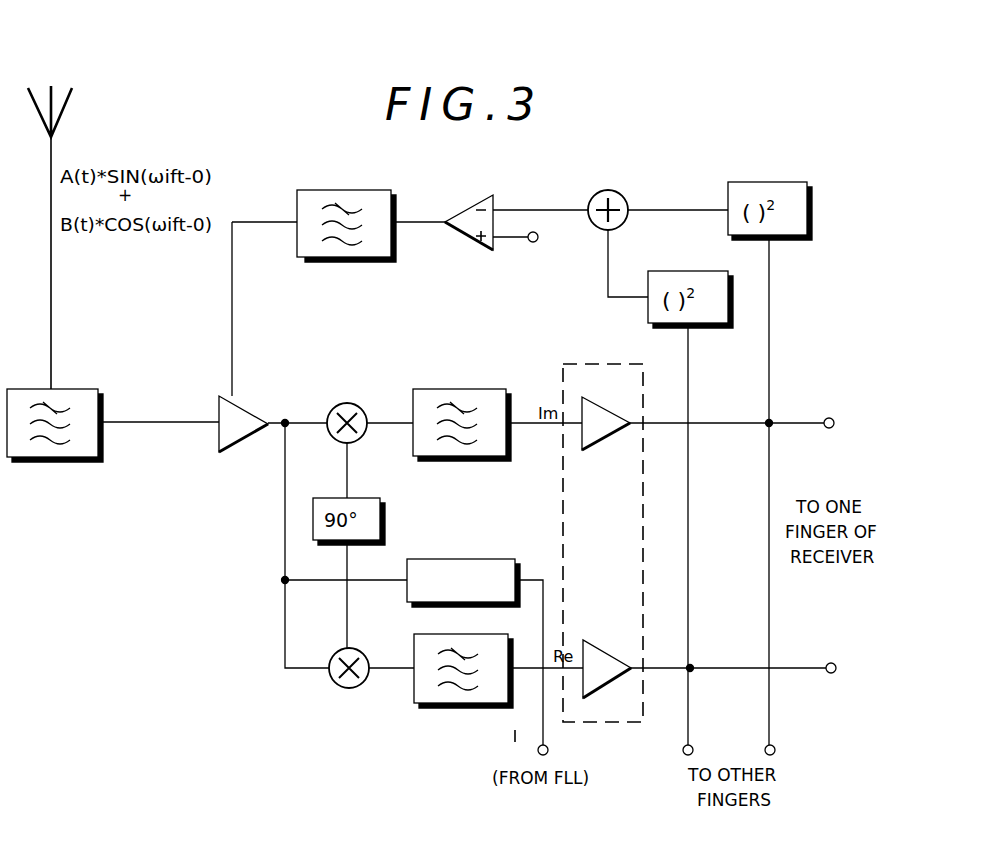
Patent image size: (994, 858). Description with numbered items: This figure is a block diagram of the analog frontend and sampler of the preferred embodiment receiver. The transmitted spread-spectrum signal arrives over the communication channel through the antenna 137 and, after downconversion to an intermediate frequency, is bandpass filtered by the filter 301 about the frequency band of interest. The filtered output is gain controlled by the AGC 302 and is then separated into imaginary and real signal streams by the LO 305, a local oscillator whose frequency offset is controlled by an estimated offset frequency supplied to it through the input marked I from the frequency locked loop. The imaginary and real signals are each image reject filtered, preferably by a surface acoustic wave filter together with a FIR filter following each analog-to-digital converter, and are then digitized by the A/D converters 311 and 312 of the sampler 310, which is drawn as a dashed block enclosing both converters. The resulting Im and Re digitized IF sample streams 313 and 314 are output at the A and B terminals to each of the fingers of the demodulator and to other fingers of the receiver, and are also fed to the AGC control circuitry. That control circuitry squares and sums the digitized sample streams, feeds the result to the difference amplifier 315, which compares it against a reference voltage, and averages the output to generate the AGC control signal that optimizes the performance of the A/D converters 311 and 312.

The antenna 137 is at (66, 110).
The filter 301 is at (52, 465).
The AGC 302 is at (250, 443).
The LO 305 is at (470, 557).
The sampler 310 is at (603, 362).
The A/D converter 311 is at (606, 408).
The A/D converter 312 is at (606, 651).
The Im digitized IF sample stream 313 is at (664, 422).
The Re digitized IF sample stream 314 is at (664, 668).
The difference amplifier 315 is at (472, 210).